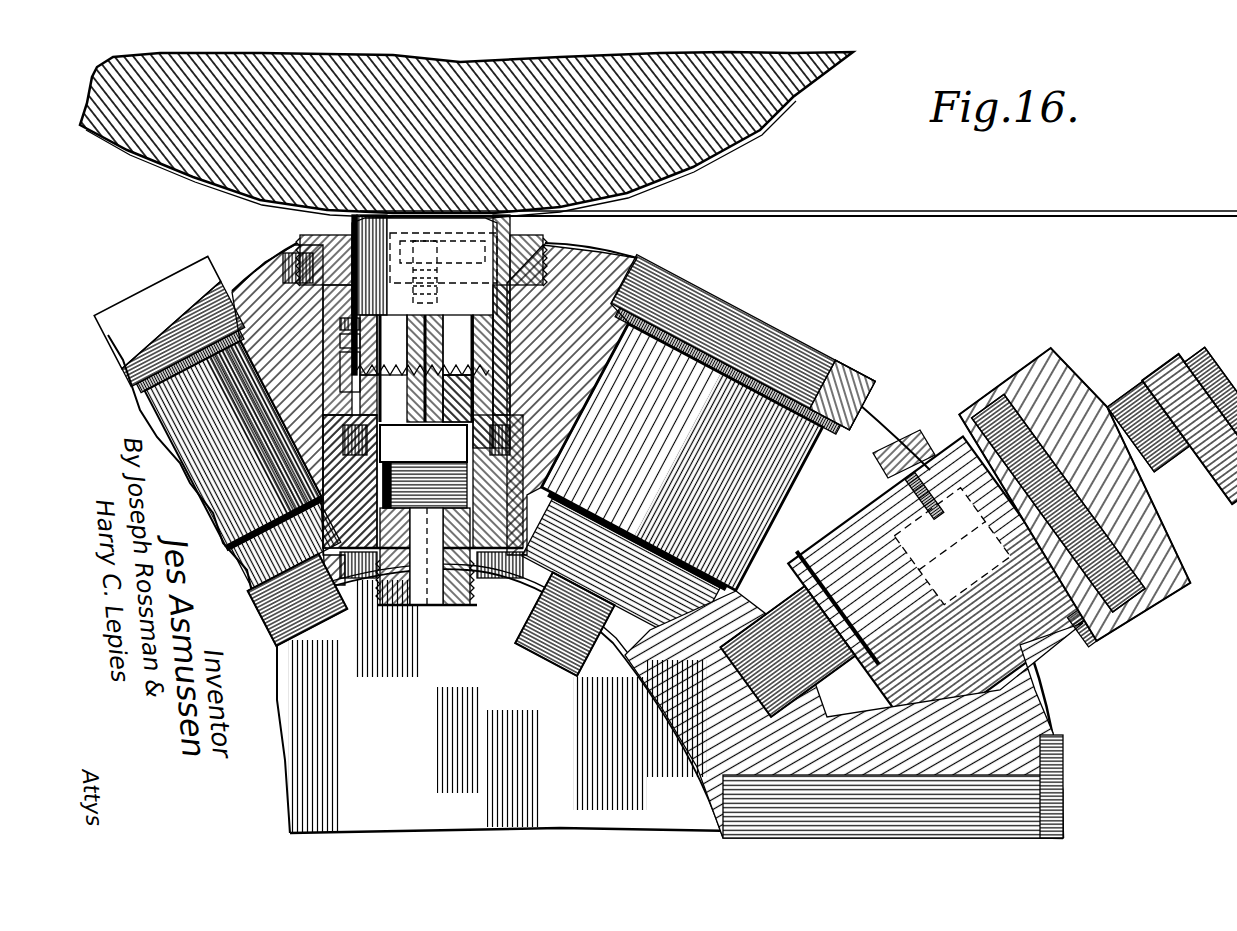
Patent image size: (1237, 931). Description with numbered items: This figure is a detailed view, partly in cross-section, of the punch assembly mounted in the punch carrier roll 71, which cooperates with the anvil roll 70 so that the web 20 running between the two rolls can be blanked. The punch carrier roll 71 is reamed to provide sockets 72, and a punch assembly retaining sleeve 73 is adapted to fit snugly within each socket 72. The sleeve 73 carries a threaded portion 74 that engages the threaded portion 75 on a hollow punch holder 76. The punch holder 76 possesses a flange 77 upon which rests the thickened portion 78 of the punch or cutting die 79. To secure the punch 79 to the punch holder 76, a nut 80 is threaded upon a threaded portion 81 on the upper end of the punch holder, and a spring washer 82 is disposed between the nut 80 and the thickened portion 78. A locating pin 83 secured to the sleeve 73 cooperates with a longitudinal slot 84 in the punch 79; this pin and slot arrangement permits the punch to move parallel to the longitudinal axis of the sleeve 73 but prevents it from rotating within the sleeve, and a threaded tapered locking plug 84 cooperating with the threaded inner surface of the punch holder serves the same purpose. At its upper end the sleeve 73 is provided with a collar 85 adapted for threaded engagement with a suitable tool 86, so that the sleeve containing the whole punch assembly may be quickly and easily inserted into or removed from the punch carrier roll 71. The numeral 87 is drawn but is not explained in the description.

The web 20 is at (207, 183).
The anvil roll 70 is at (673, 167).
The punch carrier roll 71 is at (1050, 708).
The socket 72 is at (352, 587).
The punch assembly retaining sleeve 73 is at (523, 310).
The threaded portion 74 is at (320, 395).
The threaded portion 75 is at (500, 422).
The hollow punch holder 76 is at (343, 383).
The flange 77 is at (505, 385).
The thickened portion 78 is at (515, 352).
The punch or cutting die 79 is at (343, 263).
The nut 80 is at (483, 320).
The threaded portion 81 is at (425, 368).
The spring washer 82 is at (423, 387).
The locating pin 83 is at (338, 321).
The longitudinal slot 84 is at (338, 340).
The collar 85 is at (543, 250).
The tool 86 is at (1167, 600).
The threaded portion 87 is at (897, 463).